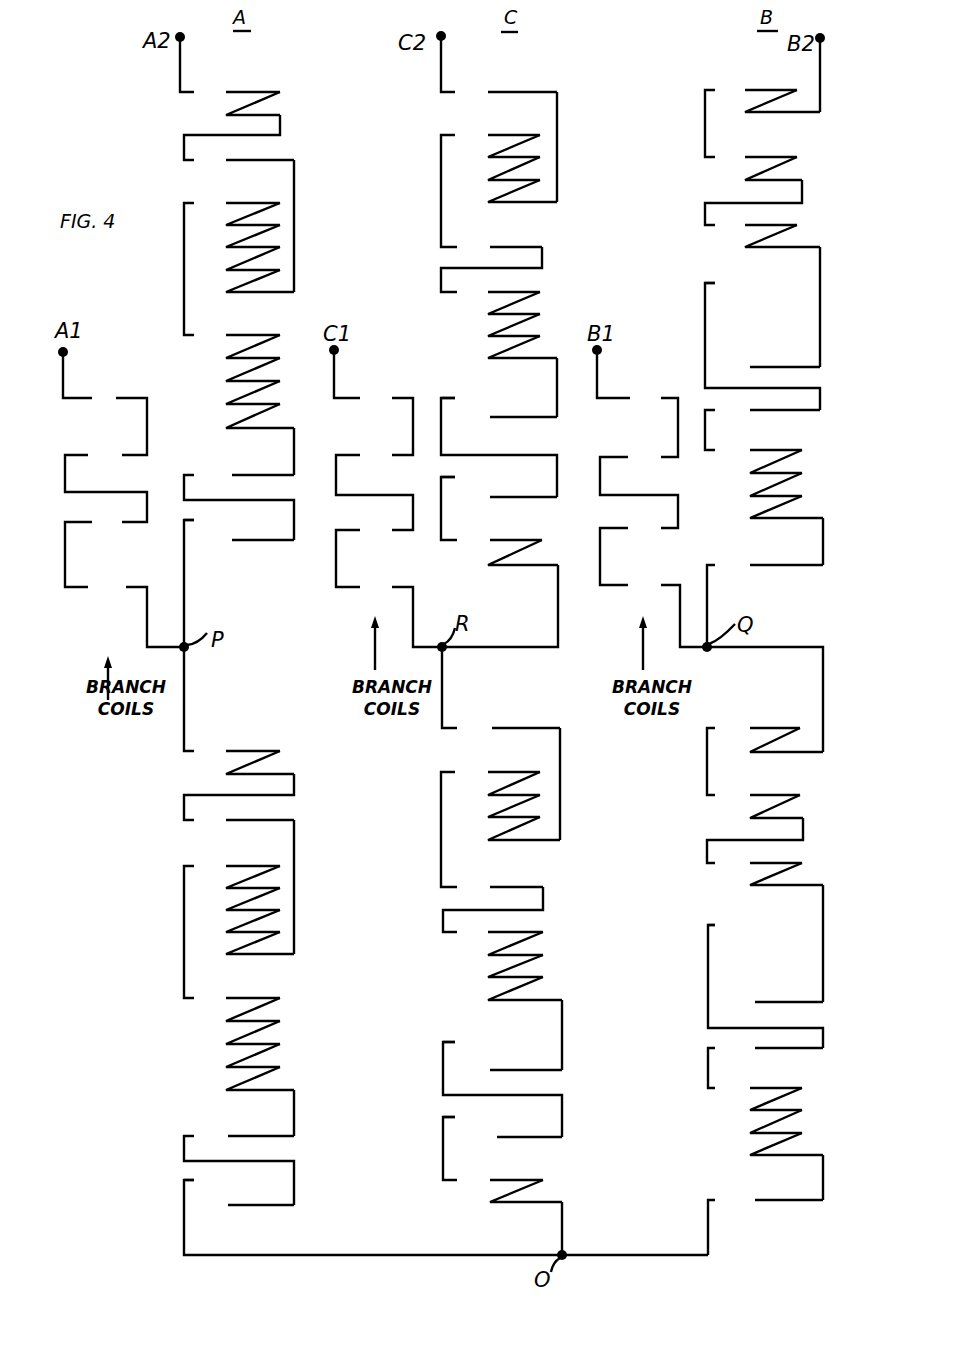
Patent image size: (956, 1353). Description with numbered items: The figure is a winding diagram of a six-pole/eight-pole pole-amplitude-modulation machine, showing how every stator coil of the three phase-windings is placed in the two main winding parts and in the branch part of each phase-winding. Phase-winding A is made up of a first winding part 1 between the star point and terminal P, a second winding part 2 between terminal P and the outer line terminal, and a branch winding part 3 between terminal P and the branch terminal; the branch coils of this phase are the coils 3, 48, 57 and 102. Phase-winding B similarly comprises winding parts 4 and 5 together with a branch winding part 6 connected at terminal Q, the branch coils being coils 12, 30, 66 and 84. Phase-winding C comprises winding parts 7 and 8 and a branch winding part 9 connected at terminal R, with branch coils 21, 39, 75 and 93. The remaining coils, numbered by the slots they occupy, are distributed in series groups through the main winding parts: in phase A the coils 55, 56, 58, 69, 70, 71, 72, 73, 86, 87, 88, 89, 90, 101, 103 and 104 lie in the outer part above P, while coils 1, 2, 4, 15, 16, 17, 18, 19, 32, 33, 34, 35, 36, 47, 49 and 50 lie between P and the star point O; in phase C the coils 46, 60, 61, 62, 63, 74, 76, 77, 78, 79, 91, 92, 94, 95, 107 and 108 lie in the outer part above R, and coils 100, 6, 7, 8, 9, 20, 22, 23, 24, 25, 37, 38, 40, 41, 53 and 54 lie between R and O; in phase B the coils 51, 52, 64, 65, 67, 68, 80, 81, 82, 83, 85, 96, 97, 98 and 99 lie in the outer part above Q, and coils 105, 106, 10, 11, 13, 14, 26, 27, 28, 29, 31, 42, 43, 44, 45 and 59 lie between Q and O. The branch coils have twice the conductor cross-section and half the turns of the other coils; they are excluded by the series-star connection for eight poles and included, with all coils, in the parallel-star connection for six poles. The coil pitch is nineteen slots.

The winding part 1 is at (316, 858).
The winding part 2 is at (294, 240).
The branch winding part 3 is at (57, 560).
The winding part 4 is at (823, 948).
The winding part 5 is at (820, 318).
The branch winding part 6 is at (601, 586).
The winding part 7 is at (583, 748).
The winding part 8 is at (557, 157).
The branch winding part 9 is at (336, 588).
The coil 10 is at (761, 795).
The coil 11 is at (762, 812).
The branch coil 12 is at (655, 422).
The coil 13 is at (762, 863).
The coil 14 is at (772, 879).
The coil 15 is at (238, 866).
The coil 16 is at (238, 882).
The coil 17 is at (238, 904).
The coil 18 is at (238, 926).
The coil 19 is at (245, 948).
The coil 20 is at (502, 887).
The branch coil 21 is at (388, 421).
The coil 22 is at (502, 932).
The coil 23 is at (502, 949).
The coil 24 is at (502, 971).
The coil 25 is at (511, 994).
The coil 26 is at (728, 925).
The coil 27 is at (736, 950).
The coil 28 is at (736, 975).
The coil 29 is at (773, 1002).
The branch coil 30 is at (639, 487).
The coil 31 is at (773, 1048).
The coil 32 is at (238, 998).
The coil 33 is at (238, 1015).
The coil 34 is at (238, 1038).
The coil 35 is at (238, 1061).
The coil 36 is at (245, 1084).
The coil 37 is at (464, 1042).
The coil 38 is at (511, 1070).
The branch coil 39 is at (374, 487).
The coil 40 is at (464, 1117).
The coil 41 is at (512, 1137).
The coil 42 is at (762, 1088).
The coil 43 is at (762, 1104).
The coil 44 is at (762, 1127).
The coil 45 is at (772, 1149).
The coil 46 is at (508, 92).
The coil 47 is at (245, 1136).
The branch coil 48 is at (106, 483).
The coil 49 is at (202, 1180).
The coil 50 is at (245, 1205).
The coil 51 is at (758, 90).
The coil 52 is at (770, 106).
The coil 53 is at (502, 1180).
The coil 54 is at (511, 1196).
The coil 55 is at (238, 92).
The coil 56 is at (238, 108).
The branch coil 57 is at (92, 549).
The coil 58 is at (245, 160).
The coil 59 is at (773, 1200).
The coil 60 is at (499, 135).
The coil 61 is at (499, 151).
The coil 62 is at (499, 174).
The coil 63 is at (508, 196).
The coil 64 is at (758, 157).
The coil 65 is at (761, 174).
The branch coil 66 is at (628, 551).
The coil 67 is at (758, 225).
The coil 68 is at (770, 241).
The coil 69 is at (238, 203).
The coil 70 is at (238, 219).
The coil 71 is at (238, 241).
The coil 72 is at (238, 264).
The coil 73 is at (245, 286).
The coil 74 is at (501, 247).
The branch coil 75 is at (362, 553).
The coil 76 is at (500, 292).
The coil 77 is at (500, 308).
The coil 78 is at (500, 330).
The coil 79 is at (509, 352).
The coil 80 is at (724, 283).
The coil 81 is at (732, 310).
The coil 82 is at (732, 338).
The coil 83 is at (770, 367).
The branch coil 84 is at (670, 610).
The coil 85 is at (770, 410).
The coil 86 is at (238, 335).
The coil 87 is at (238, 352).
The coil 88 is at (238, 375).
The coil 89 is at (238, 398).
The coil 90 is at (245, 421).
The coil 91 is at (463, 398).
The coil 92 is at (509, 417).
The branch coil 93 is at (403, 611).
The coil 94 is at (463, 477).
The coil 95 is at (509, 497).
The coil 96 is at (761, 450).
The coil 97 is at (761, 467).
The coil 98 is at (761, 490).
The coil 99 is at (771, 512).
The coil 100 is at (508, 728).
The coil 101 is at (245, 475).
The branch coil 102 is at (135, 611).
The coil 103 is at (208, 520).
The coil 104 is at (245, 540).
The coil 105 is at (759, 728).
The coil 106 is at (770, 745).
The coil 107 is at (499, 540).
The coil 108 is at (507, 558).